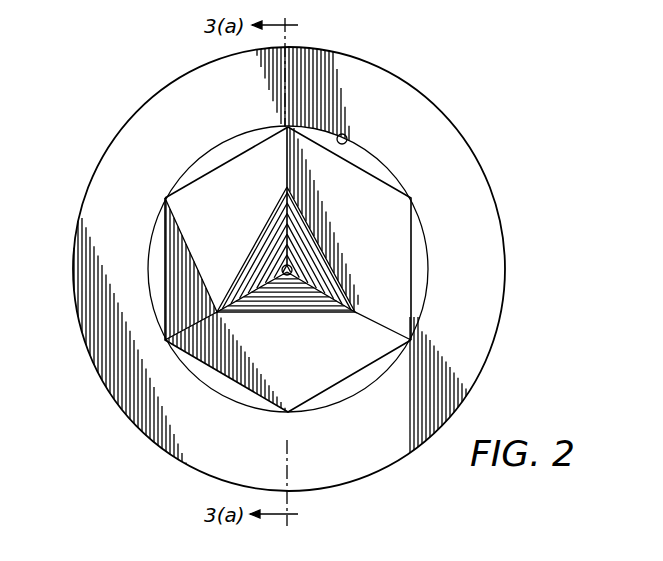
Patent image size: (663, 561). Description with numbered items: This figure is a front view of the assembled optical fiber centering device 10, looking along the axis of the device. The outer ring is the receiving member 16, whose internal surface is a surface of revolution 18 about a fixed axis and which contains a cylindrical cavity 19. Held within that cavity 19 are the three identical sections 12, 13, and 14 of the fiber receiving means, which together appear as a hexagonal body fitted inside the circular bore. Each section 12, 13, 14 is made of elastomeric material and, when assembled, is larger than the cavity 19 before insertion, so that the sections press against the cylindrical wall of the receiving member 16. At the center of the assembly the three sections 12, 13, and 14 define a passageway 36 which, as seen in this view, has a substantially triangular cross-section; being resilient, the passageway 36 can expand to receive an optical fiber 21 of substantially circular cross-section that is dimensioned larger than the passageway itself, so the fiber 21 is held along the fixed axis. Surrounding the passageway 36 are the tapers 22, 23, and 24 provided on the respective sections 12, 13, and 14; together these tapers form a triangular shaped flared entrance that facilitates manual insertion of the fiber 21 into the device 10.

The optical fiber centering device 10 is at (134, 66).
The section 12 is at (195, 195).
The section 13 is at (405, 244).
The section 14 is at (330, 386).
The receiving member 16 is at (430, 120).
The surface of revolution 18 is at (352, 132).
The cylindrical cavity 19 is at (155, 238).
The optical fiber 21 is at (282, 262).
The taper 22 is at (256, 250).
The taper 23 is at (307, 235).
The taper 24 is at (314, 320).
The passageway 36 is at (298, 275).